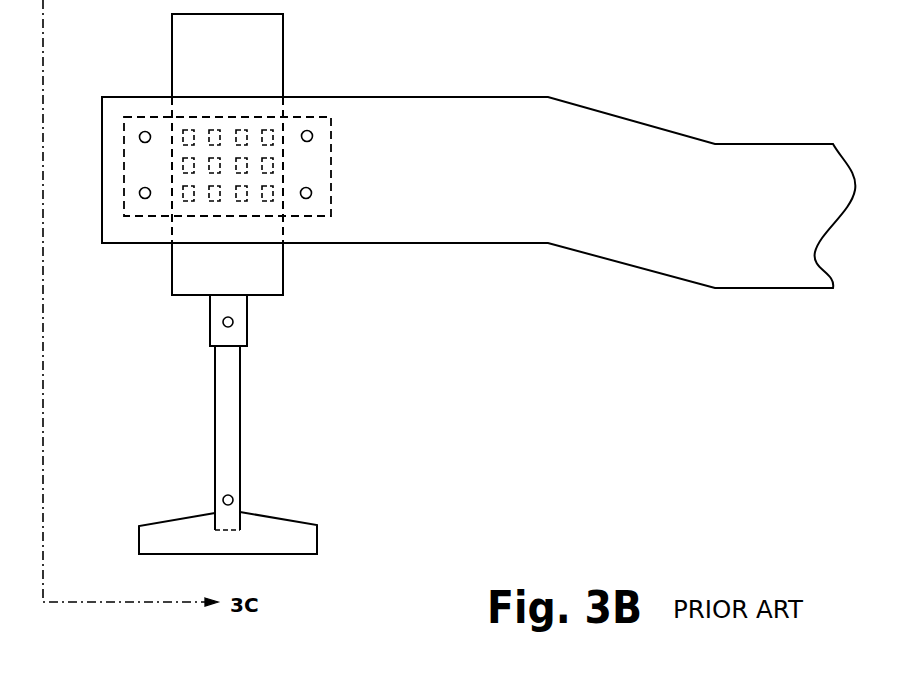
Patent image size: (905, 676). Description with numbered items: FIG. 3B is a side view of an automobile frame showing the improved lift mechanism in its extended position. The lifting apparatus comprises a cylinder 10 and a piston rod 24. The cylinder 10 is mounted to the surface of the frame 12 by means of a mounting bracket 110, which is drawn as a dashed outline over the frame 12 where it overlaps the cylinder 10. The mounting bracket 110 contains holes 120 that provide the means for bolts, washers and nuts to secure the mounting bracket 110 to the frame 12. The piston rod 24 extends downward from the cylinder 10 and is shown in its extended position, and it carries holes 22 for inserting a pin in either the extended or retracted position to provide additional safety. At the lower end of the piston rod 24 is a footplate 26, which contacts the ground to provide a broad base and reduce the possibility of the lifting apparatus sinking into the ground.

The cylinder 10 is at (283, 54).
The frame 12 is at (613, 152).
The holes 22 is at (233, 322).
The piston rod 24 is at (230, 400).
The footplate 26 is at (298, 538).
The mounting bracket 110 is at (331, 153).
The holes 120 is at (312, 193).